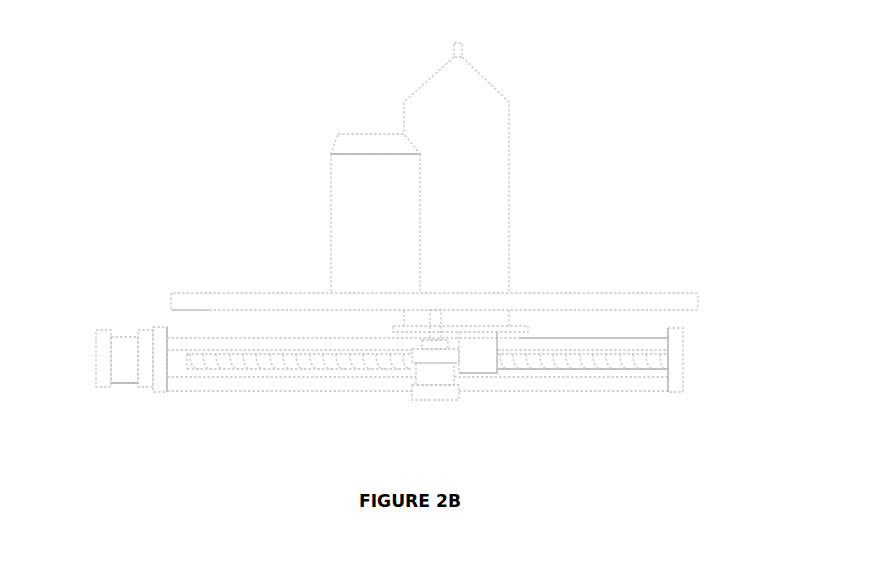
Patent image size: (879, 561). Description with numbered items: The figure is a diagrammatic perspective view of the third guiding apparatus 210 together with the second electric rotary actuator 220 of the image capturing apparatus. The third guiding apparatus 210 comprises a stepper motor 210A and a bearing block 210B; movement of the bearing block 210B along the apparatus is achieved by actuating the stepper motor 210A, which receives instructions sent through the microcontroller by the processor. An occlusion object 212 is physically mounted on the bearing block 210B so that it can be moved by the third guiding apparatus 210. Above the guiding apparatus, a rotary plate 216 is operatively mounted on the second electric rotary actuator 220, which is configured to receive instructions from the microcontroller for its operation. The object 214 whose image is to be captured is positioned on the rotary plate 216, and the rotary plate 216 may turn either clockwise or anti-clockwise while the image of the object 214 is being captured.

The third guiding apparatus 210 is at (222, 399).
The stepper motor 210A is at (93, 330).
The bearing block 210B is at (500, 375).
The occlusion object 212 is at (490, 72).
The object 214 is at (318, 157).
The rotary plate 216 is at (702, 288).
The second electric rotary actuator 220 is at (448, 408).